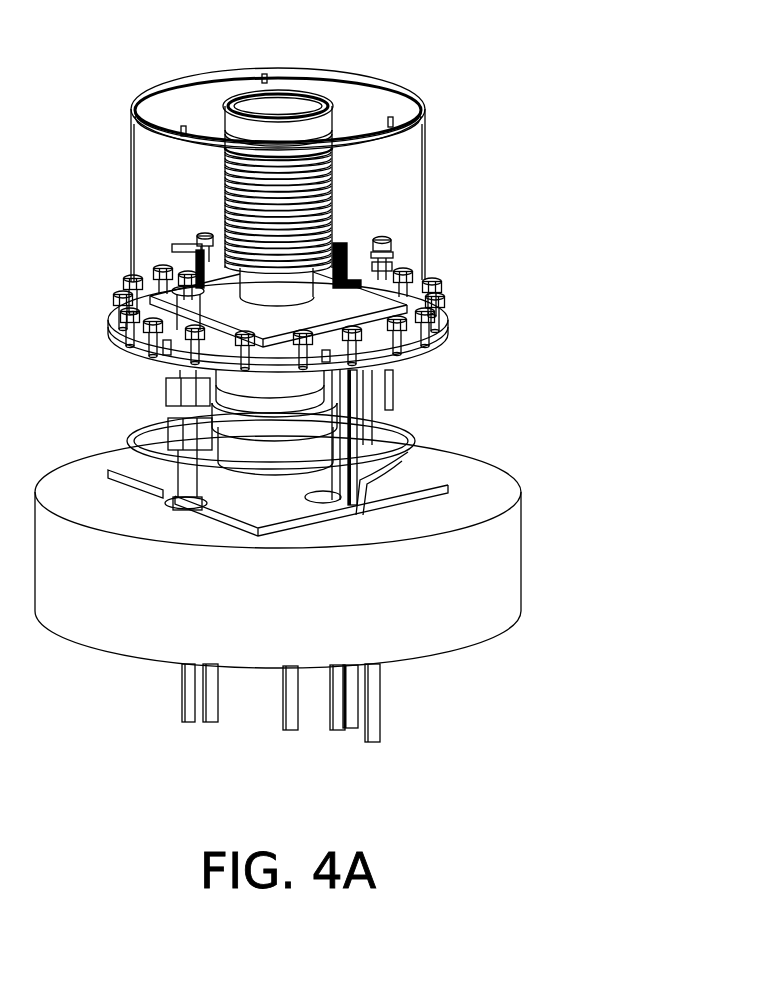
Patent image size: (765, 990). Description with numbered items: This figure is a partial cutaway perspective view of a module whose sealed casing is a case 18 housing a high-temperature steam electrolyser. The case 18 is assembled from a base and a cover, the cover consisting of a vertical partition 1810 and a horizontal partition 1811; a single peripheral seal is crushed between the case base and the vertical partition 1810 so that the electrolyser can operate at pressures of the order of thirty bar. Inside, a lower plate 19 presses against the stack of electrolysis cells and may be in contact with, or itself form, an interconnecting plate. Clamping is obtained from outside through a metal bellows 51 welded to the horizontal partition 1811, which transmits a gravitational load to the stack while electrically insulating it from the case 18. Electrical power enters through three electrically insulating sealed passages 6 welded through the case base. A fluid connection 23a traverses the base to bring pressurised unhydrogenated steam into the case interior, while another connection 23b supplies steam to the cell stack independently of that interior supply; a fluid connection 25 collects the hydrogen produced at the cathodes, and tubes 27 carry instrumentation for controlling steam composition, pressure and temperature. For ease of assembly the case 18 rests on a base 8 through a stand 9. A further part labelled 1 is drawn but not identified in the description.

The flange 1 is at (442, 340).
The electrically insulating sealed passage 6 is at (197, 240).
The base 8 is at (507, 557).
The stand 9 is at (257, 478).
The case 18 is at (450, 228).
The lower plate 19 is at (327, 270).
The fluid connection 23a is at (372, 458).
The fluid connection 23b is at (286, 705).
The fluid connection 25 is at (407, 437).
The tube 27 is at (352, 473).
The metal bellows 51 is at (223, 115).
The vertical partition 1810 is at (417, 162).
The horizontal partition 1811 is at (360, 98).